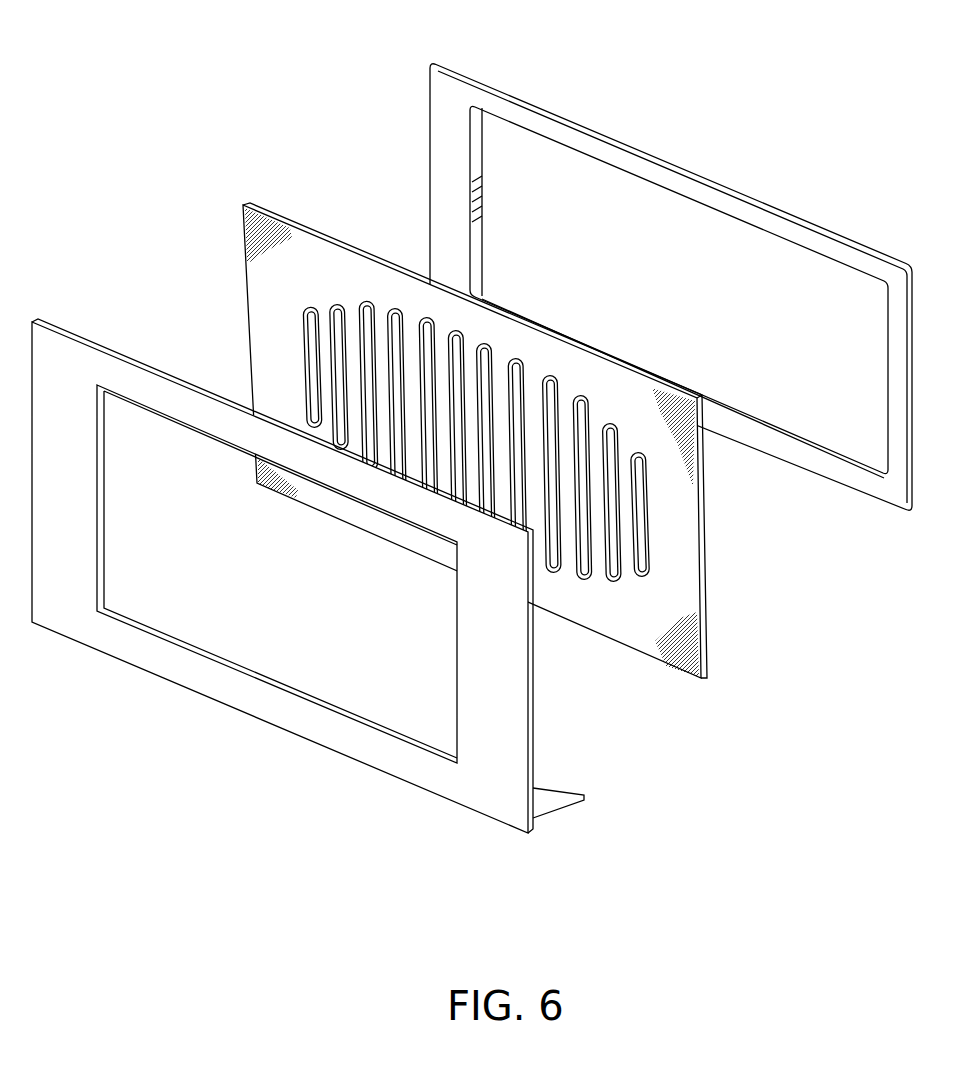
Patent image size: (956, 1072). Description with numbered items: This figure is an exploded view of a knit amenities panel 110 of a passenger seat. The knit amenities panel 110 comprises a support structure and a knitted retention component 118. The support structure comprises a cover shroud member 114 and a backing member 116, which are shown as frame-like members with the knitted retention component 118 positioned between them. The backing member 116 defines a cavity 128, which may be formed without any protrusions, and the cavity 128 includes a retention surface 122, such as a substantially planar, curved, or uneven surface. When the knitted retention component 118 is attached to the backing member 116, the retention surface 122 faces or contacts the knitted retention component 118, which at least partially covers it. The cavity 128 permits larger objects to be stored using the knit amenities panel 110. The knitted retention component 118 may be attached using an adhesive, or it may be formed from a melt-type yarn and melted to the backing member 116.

The knit amenities panel 110 is at (160, 187).
The cover shroud member 114 is at (510, 737).
The backing member 116 is at (446, 88).
The knitted retention component 118 is at (670, 577).
The retention surface 122 is at (799, 280).
The cavity 128 is at (670, 186).